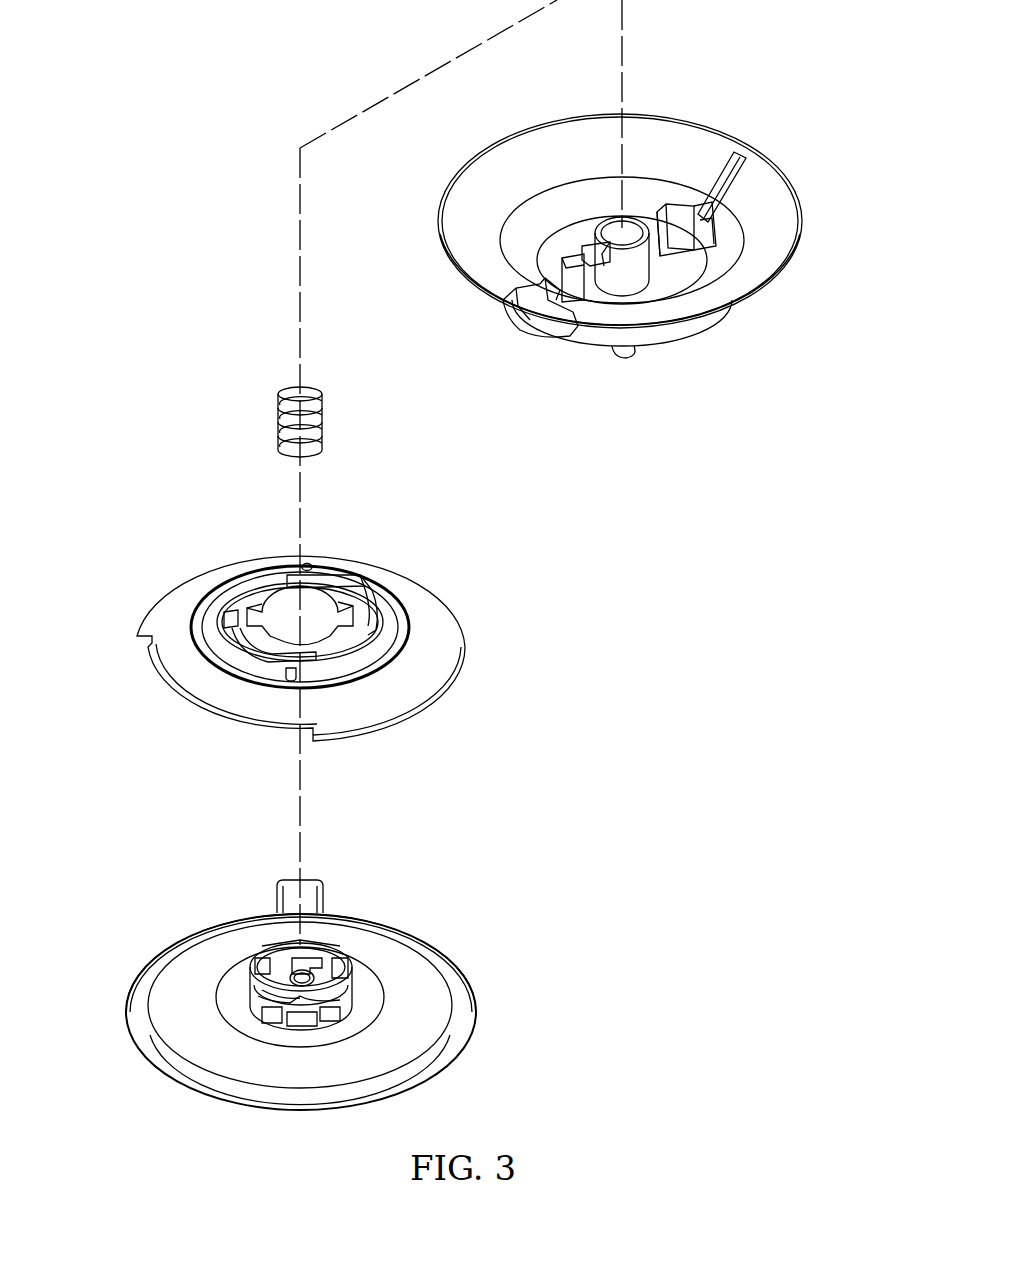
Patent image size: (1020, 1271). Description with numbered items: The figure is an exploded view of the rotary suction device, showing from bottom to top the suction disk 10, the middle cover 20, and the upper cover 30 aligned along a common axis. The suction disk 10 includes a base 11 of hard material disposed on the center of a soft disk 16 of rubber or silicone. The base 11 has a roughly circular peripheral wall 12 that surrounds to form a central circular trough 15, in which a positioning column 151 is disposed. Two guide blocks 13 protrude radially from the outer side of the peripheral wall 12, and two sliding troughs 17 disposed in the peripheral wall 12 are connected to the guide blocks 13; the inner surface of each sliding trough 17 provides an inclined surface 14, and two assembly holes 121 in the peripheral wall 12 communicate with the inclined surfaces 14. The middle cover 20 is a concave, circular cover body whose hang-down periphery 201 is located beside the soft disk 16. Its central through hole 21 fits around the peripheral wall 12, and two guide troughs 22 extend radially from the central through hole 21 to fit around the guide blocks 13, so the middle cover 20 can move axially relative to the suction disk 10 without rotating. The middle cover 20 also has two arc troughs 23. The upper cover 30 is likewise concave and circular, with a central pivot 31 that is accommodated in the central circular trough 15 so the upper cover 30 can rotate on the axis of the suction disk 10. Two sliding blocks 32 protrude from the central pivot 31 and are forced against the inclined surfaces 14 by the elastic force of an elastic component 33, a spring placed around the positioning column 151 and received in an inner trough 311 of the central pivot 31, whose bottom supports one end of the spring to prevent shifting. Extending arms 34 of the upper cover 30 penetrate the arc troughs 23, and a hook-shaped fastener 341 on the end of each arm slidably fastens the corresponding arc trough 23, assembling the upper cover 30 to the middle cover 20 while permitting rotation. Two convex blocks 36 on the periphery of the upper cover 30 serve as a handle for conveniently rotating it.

The suction disk 10 is at (481, 990).
The base 11 is at (332, 942).
The peripheral wall 12 is at (327, 1002).
The assembly hole 121 is at (262, 962).
The guide block 13 is at (355, 985).
The inclined surface 14 is at (266, 1024).
The central circular trough 15 is at (264, 956).
The positioning column 151 is at (308, 970).
The soft disk 16 is at (405, 1082).
The sliding trough 17 is at (279, 957).
The middle cover 20 is at (458, 598).
The hang-down periphery 201 is at (452, 688).
The central through hole 21 is at (313, 613).
The guide trough 22 is at (353, 620).
The arc trough 23 is at (230, 611).
The upper cover 30 is at (744, 134).
The central pivot 31 is at (630, 265).
The inner trough 311 is at (610, 235).
The sliding block 32 is at (653, 213).
The elastic component 33 is at (280, 413).
The extending arm 34 is at (672, 240).
The fastener 341 is at (684, 212).
The convex block 36 is at (545, 330).